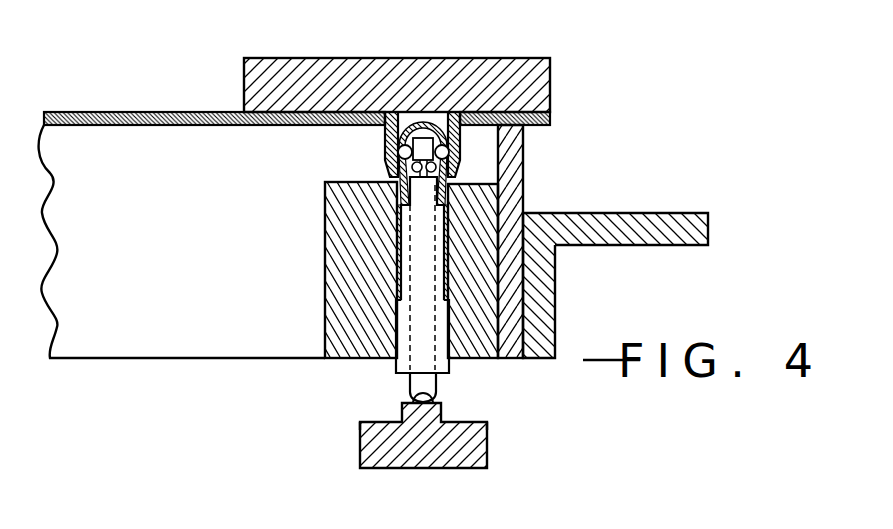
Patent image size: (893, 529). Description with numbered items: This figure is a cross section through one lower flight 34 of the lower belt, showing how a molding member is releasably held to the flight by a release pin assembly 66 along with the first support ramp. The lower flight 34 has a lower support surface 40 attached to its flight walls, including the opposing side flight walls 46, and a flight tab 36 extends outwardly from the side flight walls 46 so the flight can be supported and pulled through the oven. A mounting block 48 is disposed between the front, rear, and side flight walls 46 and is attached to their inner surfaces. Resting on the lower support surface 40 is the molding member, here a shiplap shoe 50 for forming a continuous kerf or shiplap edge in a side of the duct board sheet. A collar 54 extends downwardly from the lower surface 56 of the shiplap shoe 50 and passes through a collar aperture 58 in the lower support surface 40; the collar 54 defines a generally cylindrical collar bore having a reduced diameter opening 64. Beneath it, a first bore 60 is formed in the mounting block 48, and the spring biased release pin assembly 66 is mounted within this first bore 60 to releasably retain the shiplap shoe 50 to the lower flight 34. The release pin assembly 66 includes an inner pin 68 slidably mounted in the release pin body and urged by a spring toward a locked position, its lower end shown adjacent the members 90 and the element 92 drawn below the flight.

The lower flight 34 is at (93, 78).
The flight tab 36 is at (660, 213).
The lower support surface 40 is at (163, 112).
The side flight walls 46 is at (528, 187).
The mounting block 48 is at (342, 293).
The shiplap shoe 50 is at (445, 58).
The collar 54 is at (376, 143).
The lower surface 56 is at (283, 126).
The collar aperture 58 is at (417, 113).
The first bore 60 is at (398, 254).
The reduced diameter opening 64 is at (498, 168).
The release pin assembly 66 is at (453, 375).
The inner pin 68 is at (407, 385).
The anvil retaining edges 90 is at (380, 422).
The anvil 92 is at (435, 403).